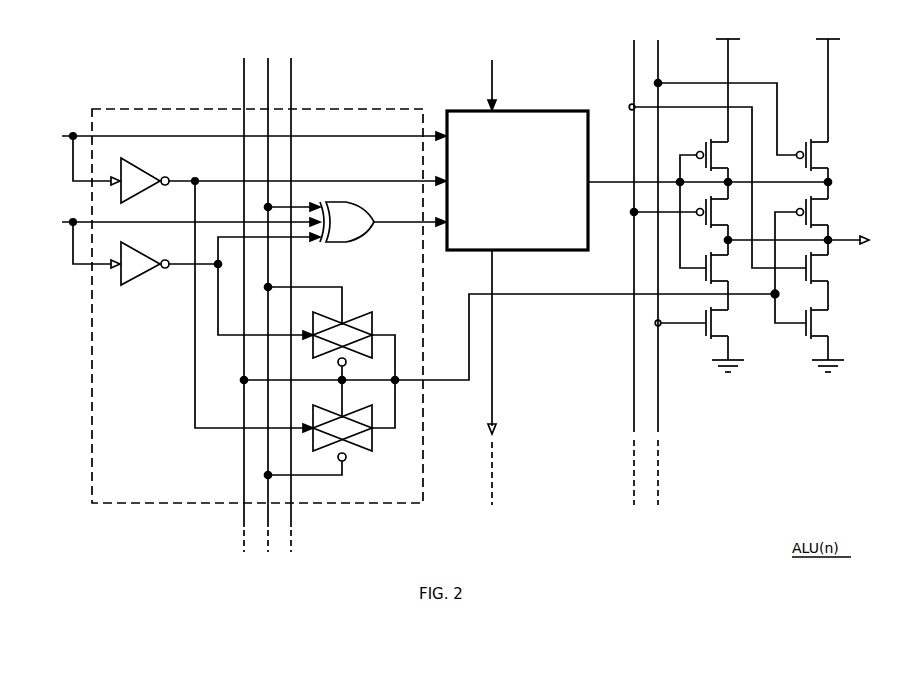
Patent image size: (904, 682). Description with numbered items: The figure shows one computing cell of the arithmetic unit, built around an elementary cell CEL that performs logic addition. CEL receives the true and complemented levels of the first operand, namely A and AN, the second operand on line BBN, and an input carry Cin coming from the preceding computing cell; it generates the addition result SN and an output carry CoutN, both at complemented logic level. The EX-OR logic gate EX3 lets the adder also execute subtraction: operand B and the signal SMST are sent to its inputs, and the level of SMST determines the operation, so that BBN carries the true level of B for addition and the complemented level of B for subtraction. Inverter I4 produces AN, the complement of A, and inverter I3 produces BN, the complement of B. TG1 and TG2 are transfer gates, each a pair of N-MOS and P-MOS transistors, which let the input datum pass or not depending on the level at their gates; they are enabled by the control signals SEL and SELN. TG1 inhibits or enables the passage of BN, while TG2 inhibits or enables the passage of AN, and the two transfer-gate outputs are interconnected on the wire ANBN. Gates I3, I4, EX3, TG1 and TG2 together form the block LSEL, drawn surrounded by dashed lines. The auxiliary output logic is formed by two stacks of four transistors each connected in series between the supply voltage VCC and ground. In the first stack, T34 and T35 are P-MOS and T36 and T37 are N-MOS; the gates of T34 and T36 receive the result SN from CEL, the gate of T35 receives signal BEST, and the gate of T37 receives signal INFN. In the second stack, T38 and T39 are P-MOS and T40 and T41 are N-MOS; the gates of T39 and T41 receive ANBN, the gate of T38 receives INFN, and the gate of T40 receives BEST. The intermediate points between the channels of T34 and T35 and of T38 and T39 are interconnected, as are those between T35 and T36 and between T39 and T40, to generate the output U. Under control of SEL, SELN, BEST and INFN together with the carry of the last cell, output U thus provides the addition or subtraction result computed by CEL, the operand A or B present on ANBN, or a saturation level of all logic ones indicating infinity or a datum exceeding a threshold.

The selection logic block LSEL is at (345, 505).
The operand A is at (57, 134).
The operand B is at (57, 220).
The logic inverter I4 is at (143, 193).
The logic inverter I3 is at (143, 277).
The complemented operand A AN is at (365, 178).
The complemented operand B BN is at (189, 261).
The second operand output of EX3 BBN is at (413, 217).
The EX-OR logic gate EX3 is at (356, 236).
The transfer gate TG1 is at (356, 311).
The transfer gate TG2 is at (372, 448).
The transfer gate output wire ANBN is at (427, 383).
The select control signal SEL is at (275, 60).
The complementary select control signal SELN is at (244, 75).
The addition/subtraction control signal SMST is at (292, 75).
The elementary cell CEL is at (589, 118).
The input carry Cin is at (493, 78).
The output carry CoutN is at (493, 396).
The addition result SN is at (604, 184).
The control signal BEST is at (634, 42).
The control signal INFN is at (659, 43).
The supply voltage VCC is at (778, 81).
The P-MOS transistor T34 is at (713, 150).
The P-MOS transistor T35 is at (713, 207).
The N-MOS transistor T36 is at (713, 263).
The N-MOS transistor T37 is at (713, 318).
The P-MOS transistor T38 is at (813, 150).
The P-MOS transistor T39 is at (813, 207).
The N-MOS transistor T40 is at (813, 263).
The N-MOS transistor T41 is at (813, 318).
The output U is at (809, 241).